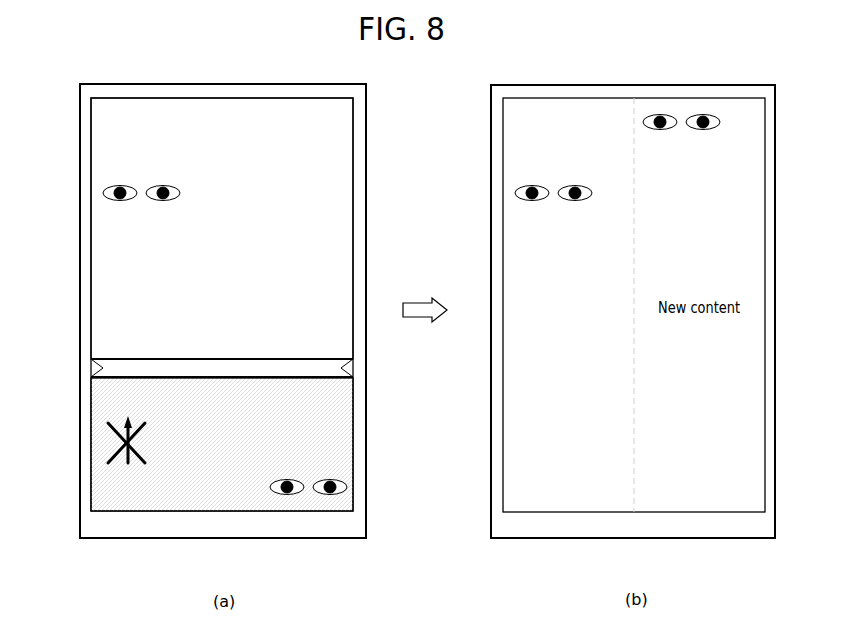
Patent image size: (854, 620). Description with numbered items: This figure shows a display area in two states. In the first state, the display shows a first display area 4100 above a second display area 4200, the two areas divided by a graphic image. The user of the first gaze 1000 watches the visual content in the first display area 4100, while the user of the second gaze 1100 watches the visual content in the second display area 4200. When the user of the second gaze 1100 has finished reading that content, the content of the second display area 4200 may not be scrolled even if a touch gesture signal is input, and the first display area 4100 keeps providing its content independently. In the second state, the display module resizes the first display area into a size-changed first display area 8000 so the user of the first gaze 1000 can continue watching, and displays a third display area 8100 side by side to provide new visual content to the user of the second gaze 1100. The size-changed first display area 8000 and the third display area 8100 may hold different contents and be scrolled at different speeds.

The first gaze 1000 is at (114, 186).
The second gaze 1100 is at (323, 497).
The first display area 4100 is at (84, 98).
The second display area 4200 is at (84, 378).
The size-changed first display area 8000 is at (634, 515).
The third display area 8100 is at (765, 515).